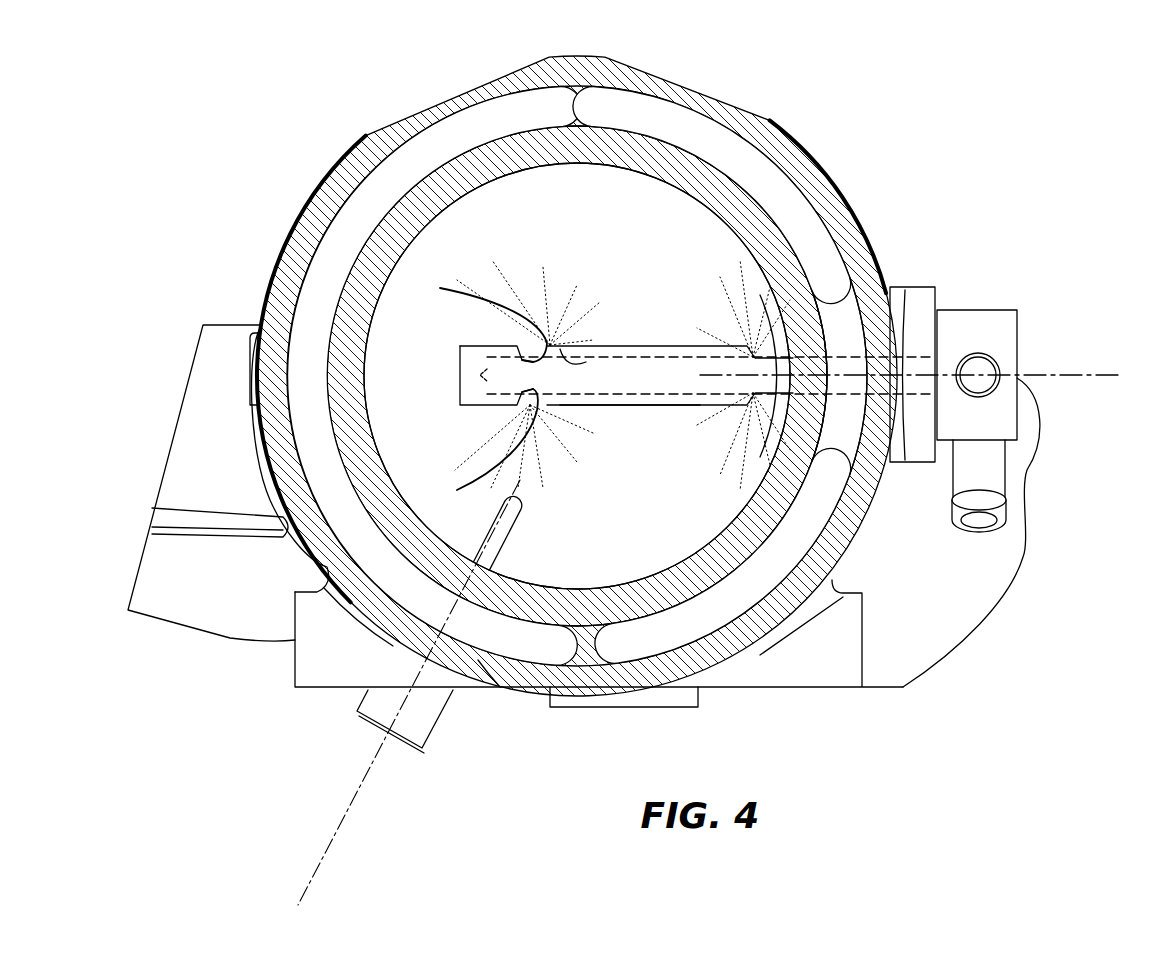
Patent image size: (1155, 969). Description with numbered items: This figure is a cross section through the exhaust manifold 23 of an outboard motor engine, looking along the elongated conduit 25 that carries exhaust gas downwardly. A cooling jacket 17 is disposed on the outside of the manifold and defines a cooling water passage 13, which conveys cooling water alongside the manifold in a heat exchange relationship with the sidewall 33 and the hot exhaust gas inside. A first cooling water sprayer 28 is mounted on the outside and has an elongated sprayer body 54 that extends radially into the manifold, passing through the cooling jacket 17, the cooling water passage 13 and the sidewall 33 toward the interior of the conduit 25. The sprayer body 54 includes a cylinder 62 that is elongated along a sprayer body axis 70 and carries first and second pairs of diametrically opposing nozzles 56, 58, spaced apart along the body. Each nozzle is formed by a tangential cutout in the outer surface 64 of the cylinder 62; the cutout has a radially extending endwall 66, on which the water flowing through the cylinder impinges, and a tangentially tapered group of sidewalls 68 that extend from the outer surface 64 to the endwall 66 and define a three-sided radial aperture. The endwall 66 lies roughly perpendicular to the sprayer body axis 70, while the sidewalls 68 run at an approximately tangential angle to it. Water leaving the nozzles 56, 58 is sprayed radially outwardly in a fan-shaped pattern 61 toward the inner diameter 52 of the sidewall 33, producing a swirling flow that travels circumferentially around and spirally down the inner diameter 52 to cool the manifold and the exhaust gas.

The cooling water passage 13 is at (500, 126).
The cooling jacket 17 is at (428, 103).
The exhaust manifold 23 is at (940, 86).
The elongated conduit 25 is at (660, 140).
The first cooling water sprayer 28 is at (1015, 283).
The sidewall 33 is at (392, 212).
The inner diameter 52 is at (583, 162).
The sprayer body 54 is at (663, 412).
The first pair of diametrically-opposing nozzles 56 is at (475, 389).
The second pair of diametrically-opposing nozzles 58 is at (770, 330).
The fan-shaped pattern 61 is at (528, 298).
The cylinder 62 is at (677, 357).
The outer surface 64 is at (615, 405).
The endwall 66 is at (520, 357).
The tangentially tapered group of sidewalls 68 is at (805, 285).
The sprayer body axis 70 is at (1100, 372).